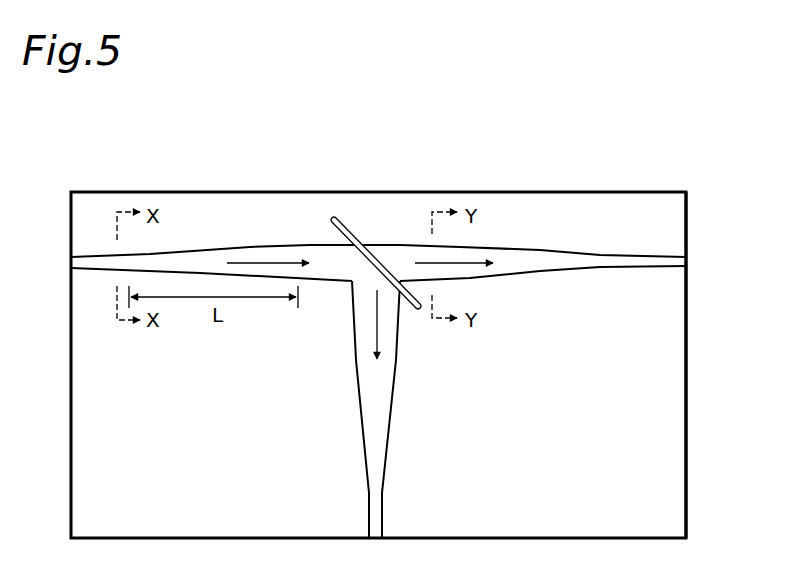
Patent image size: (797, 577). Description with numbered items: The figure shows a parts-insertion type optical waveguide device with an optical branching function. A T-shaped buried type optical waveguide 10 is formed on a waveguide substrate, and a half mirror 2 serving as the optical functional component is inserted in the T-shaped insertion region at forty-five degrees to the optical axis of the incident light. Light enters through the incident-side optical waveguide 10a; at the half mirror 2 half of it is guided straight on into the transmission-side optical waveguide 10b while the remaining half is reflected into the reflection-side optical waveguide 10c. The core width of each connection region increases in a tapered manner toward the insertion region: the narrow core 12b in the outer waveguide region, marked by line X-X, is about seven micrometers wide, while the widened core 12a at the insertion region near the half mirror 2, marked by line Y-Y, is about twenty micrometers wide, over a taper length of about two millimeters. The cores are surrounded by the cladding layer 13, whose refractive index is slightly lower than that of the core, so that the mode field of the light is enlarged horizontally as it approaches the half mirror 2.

The half mirror 2 is at (353, 238).
The optical waveguide 10 is at (510, 225).
The incident-side optical waveguide 10a is at (213, 252).
The transmission-side optical waveguide 10b is at (598, 253).
The reflection-side optical waveguide 10c is at (387, 440).
The core at the insertion region 12a is at (334, 273).
The core in the optical waveguide region 12b is at (88, 268).
The cladding layer 13 is at (672, 436).